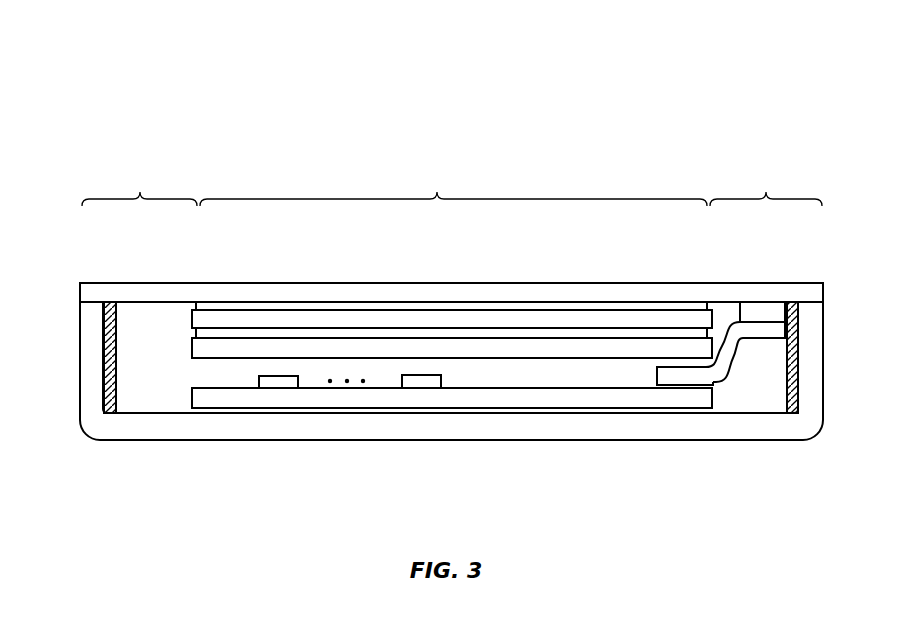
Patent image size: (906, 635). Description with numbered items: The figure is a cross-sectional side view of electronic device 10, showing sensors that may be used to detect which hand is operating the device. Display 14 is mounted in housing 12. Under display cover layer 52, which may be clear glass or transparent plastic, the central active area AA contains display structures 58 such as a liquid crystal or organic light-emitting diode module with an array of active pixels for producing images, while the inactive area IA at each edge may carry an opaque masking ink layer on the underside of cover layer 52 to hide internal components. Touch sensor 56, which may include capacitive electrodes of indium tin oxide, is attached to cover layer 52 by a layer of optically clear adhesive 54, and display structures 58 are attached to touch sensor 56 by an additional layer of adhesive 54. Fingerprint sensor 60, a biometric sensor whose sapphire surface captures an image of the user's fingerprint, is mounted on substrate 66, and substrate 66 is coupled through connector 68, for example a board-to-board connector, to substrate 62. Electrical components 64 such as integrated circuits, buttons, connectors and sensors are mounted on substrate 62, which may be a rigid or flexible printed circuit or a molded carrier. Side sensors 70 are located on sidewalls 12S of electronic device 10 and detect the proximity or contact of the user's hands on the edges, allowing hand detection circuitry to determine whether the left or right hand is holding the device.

The electronic device 10 is at (642, 49).
The housing 12 is at (712, 430).
The sidewalls 12S is at (90, 355).
The display 14 is at (452, 283).
The display cover layer 52 is at (613, 293).
The optically clear adhesive 54 is at (256, 337).
The touch sensor 56 is at (318, 318).
The display structures 58 is at (462, 348).
The fingerprint sensor 60 is at (763, 313).
The substrate 62 is at (503, 400).
The components 64 is at (279, 388).
The substrate 66 is at (730, 357).
The connector 68 is at (657, 380).
The side sensors 70 is at (113, 381).
The inactive area IA is at (452, 190).
The active area AA is at (453, 190).